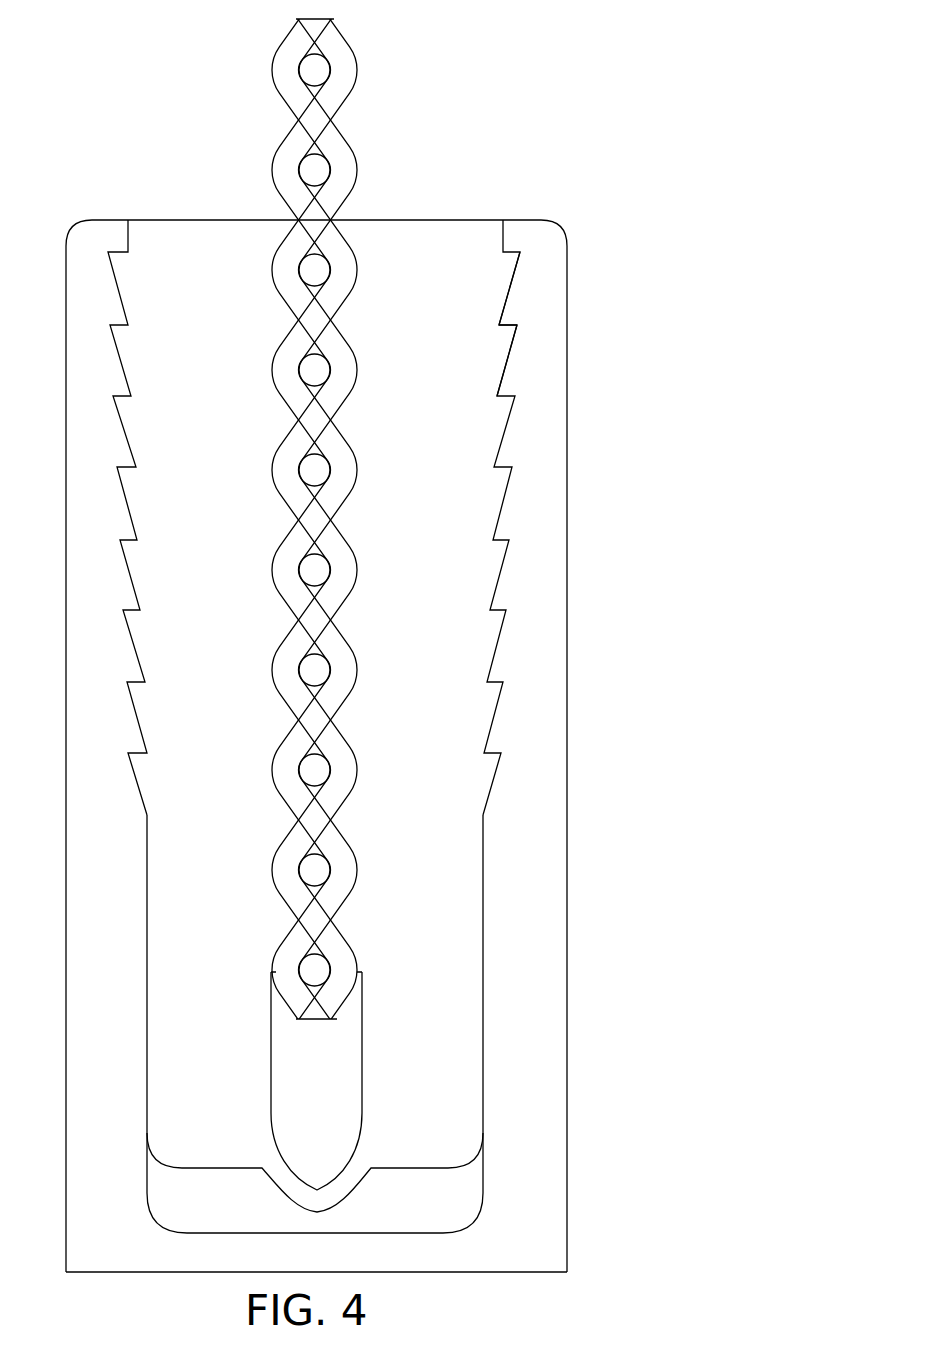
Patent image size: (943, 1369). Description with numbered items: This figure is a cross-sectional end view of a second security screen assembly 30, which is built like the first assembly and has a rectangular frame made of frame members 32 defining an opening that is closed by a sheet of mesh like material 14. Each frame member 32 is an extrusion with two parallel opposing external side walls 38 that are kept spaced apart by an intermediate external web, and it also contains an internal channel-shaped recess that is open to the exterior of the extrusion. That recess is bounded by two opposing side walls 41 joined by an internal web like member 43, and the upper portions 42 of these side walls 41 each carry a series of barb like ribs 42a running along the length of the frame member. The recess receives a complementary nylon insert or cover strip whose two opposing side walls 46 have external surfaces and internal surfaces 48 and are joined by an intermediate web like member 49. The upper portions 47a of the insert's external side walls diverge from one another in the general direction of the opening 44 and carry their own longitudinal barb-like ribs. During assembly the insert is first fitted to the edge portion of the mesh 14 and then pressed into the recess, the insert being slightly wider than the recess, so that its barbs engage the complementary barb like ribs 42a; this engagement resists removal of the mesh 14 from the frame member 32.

The sheet of mesh like material 14 is at (445, 680).
The second screen assembly 30 is at (326, 738).
The frame members 32 is at (548, 1158).
The external side walls 38 is at (80, 725).
The side walls 41 is at (128, 567).
The upper portions 42 is at (505, 363).
The barb like ribs 42a is at (500, 320).
The internal web like member 43 is at (420, 1265).
The opening 44 is at (412, 208).
The side walls 46 is at (460, 510).
The upper portions 47a is at (507, 283).
The internal surfaces 48 is at (318, 623).
The intermediate web like member 49 is at (345, 1186).